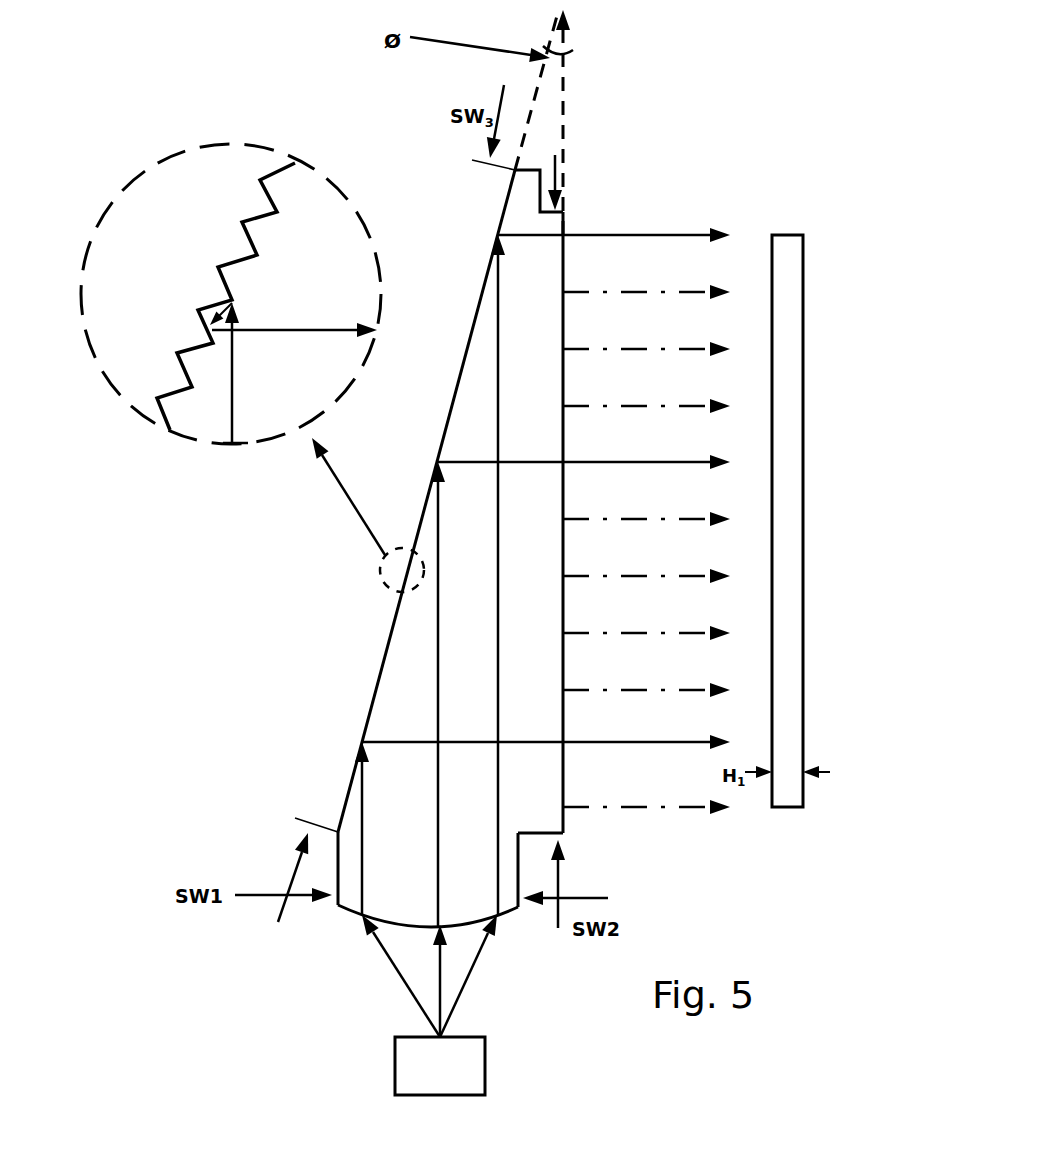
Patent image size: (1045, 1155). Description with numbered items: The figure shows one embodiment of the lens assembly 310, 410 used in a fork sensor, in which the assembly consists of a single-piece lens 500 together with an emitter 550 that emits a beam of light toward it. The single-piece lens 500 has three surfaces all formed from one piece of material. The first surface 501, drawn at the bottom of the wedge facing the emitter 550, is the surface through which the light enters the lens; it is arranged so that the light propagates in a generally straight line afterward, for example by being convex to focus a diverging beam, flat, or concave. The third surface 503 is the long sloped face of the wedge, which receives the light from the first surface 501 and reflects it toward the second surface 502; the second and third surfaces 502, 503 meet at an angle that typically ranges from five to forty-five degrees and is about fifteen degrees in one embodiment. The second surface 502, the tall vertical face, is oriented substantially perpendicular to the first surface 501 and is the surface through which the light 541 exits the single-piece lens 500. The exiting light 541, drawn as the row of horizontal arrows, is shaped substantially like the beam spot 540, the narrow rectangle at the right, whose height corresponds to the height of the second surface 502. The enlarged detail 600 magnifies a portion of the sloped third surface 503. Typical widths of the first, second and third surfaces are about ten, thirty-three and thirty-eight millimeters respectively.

The enlarged detail of stepped surface 600 is at (240, 110).
The lens assembly 310 is at (360, 580).
The lens assembly 410 is at (360, 580).
The single-piece lens 500 is at (370, 710).
The first surface 501 is at (352, 913).
The second surface 502 is at (563, 262).
The third surface 503 is at (390, 627).
The beam spot 540 is at (787, 235).
The light 541 is at (635, 350).
The emitter 550 is at (429, 1005).